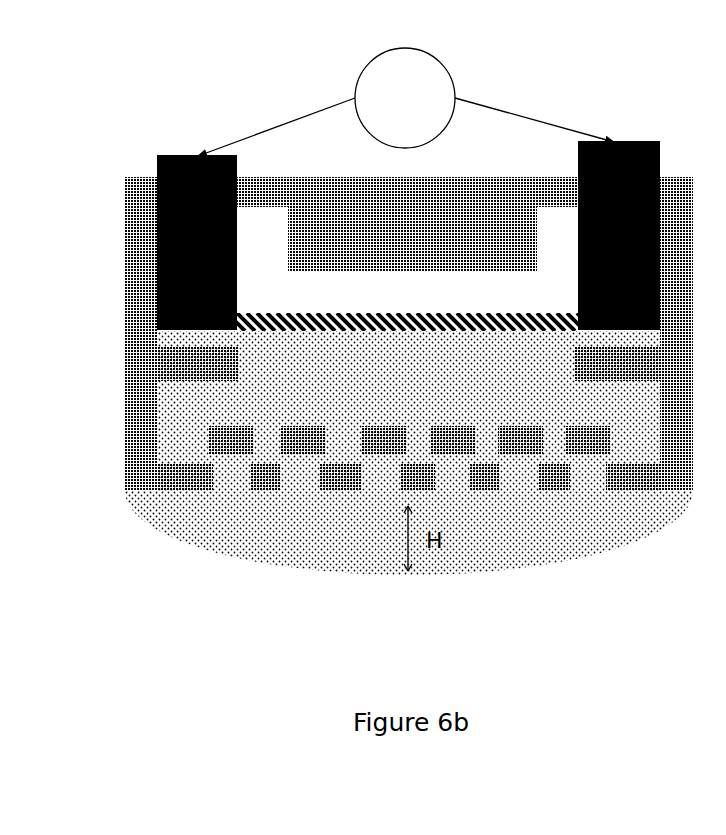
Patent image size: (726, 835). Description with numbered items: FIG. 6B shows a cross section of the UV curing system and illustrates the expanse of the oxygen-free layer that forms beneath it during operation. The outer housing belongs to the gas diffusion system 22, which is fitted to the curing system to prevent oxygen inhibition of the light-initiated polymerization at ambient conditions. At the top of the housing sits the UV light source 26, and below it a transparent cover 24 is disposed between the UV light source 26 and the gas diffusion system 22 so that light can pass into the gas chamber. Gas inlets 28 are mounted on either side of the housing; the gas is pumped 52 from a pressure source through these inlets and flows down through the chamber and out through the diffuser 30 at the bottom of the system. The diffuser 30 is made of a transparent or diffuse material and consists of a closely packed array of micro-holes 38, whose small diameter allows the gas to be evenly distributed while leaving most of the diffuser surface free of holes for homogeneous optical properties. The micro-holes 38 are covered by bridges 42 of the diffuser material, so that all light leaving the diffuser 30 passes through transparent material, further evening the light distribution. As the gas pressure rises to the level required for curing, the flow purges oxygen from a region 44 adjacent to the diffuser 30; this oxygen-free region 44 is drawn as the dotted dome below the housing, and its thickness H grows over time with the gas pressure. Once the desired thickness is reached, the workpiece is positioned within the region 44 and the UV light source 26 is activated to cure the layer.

The gas diffusion system 22 is at (100, 366).
The transparent cover 24 is at (305, 305).
The UV light source 26 is at (412, 224).
The gas inlets 28 is at (170, 147).
The diffuser 30 is at (162, 485).
The micro-holes 38 is at (590, 483).
The bridges 42 is at (508, 418).
The oxygen-free region 44 is at (278, 550).
The gas pumping 52 is at (350, 62).